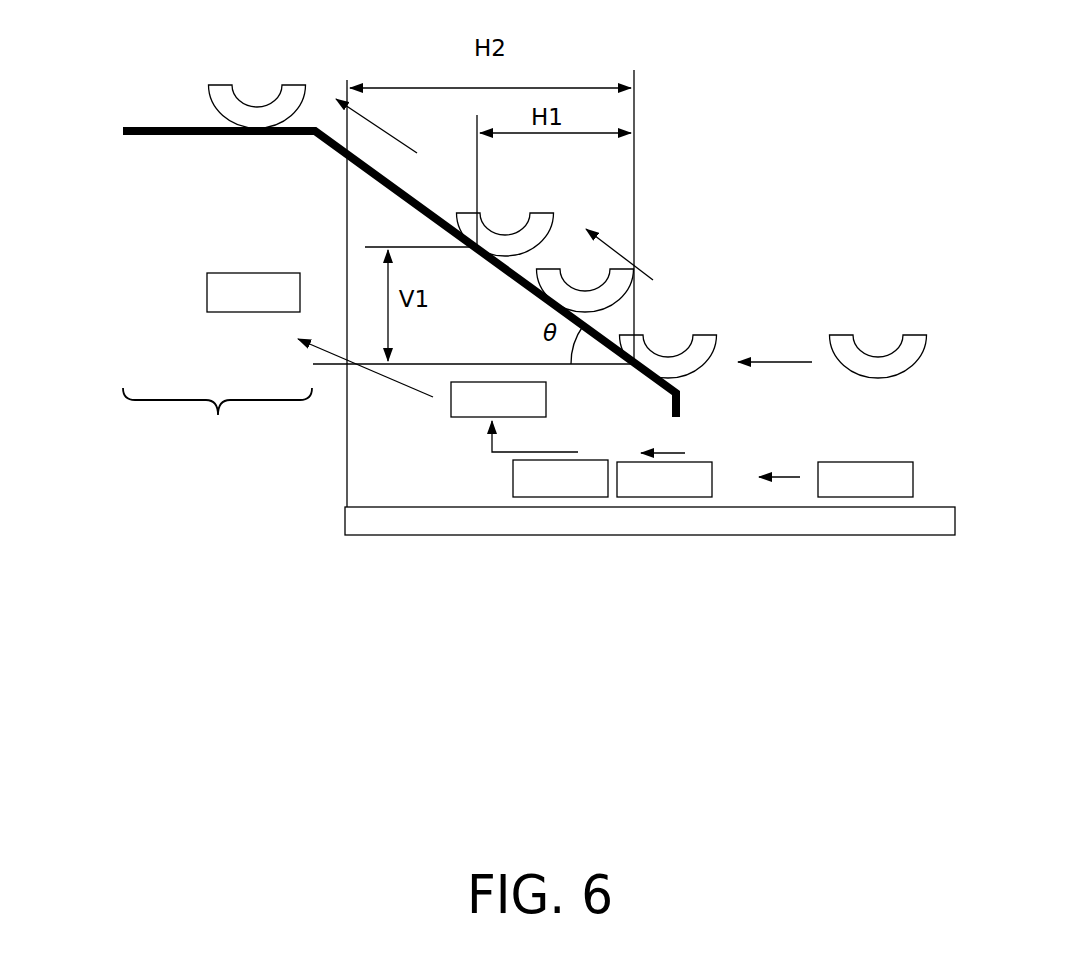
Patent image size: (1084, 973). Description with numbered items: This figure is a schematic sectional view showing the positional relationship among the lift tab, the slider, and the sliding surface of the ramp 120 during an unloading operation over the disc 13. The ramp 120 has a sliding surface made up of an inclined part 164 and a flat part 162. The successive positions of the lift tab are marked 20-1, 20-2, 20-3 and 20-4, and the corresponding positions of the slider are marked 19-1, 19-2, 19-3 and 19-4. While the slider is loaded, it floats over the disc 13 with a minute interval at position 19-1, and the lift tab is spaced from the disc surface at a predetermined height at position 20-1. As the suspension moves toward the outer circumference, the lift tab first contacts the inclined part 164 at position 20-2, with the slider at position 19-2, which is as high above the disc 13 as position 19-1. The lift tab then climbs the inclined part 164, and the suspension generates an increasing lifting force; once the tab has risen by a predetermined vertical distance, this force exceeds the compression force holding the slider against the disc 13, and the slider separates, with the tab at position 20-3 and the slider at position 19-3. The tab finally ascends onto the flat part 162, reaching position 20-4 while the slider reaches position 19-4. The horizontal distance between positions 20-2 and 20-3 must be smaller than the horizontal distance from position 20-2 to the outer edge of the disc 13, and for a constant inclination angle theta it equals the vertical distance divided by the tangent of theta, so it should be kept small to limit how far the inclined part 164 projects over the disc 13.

The inclined part 164 is at (322, 179).
The position of the lift tab 20-4 is at (222, 92).
The position of the lift tab 20-3 is at (540, 223).
The position of the lift tab 20-2 is at (702, 340).
The position of the lift tab 20-1 is at (912, 340).
The position of the slider 19-4 is at (243, 285).
The position of the slider 19-3 is at (463, 410).
The position of the slider 19-2 is at (698, 468).
The position of the slider 19-1 is at (890, 470).
The disc 13 is at (903, 525).
The flat part 162 is at (217, 423).
The ramp 120 is at (302, 446).